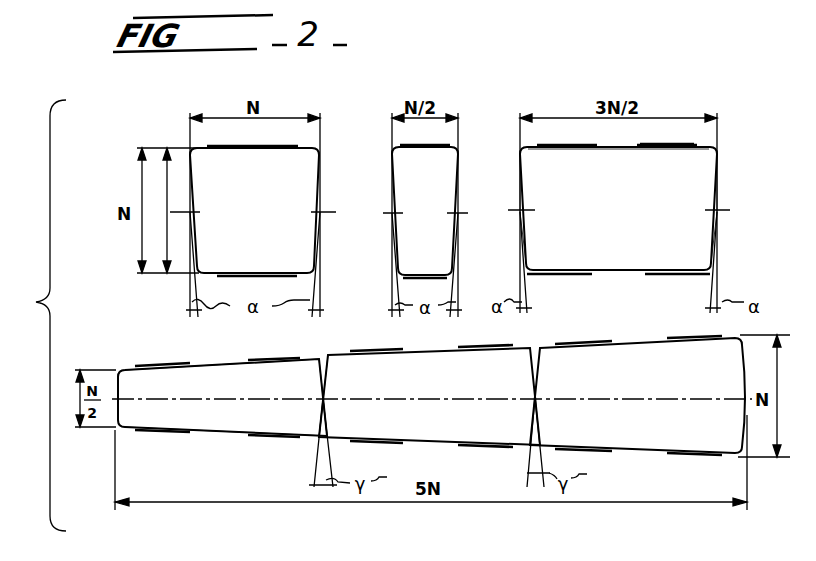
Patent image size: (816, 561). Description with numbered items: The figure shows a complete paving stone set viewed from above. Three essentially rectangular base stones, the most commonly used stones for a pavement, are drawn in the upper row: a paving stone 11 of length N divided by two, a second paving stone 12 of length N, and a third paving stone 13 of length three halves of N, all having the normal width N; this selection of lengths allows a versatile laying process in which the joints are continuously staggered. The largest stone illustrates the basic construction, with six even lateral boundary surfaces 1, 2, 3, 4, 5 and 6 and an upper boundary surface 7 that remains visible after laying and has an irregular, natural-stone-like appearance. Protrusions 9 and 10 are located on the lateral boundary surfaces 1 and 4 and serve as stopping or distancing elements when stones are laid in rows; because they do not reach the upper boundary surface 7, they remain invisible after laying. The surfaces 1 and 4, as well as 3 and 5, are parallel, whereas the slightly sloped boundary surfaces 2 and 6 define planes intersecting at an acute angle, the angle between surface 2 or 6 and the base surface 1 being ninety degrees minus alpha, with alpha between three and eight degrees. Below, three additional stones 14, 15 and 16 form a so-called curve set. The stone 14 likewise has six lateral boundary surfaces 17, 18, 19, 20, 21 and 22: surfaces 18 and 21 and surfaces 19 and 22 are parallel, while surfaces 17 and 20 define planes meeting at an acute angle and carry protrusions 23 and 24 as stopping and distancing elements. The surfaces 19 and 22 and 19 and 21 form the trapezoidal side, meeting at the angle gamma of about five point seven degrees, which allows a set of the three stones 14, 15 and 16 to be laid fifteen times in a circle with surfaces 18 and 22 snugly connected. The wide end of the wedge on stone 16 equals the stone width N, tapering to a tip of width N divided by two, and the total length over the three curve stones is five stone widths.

The lateral boundary surface 1 is at (621, 276).
The lateral boundary surface 2 is at (716, 246).
The lateral boundary surface 3 is at (718, 184).
The lateral boundary surface 4 is at (622, 146).
The lateral boundary surface 5 is at (520, 182).
The lateral boundary surface 6 is at (521, 249).
The upper boundary surface 7 is at (608, 225).
The protrusion 9 is at (553, 278).
The protrusion 10 is at (559, 144).
The paving stone 11 is at (436, 134).
The paving stone 12 is at (287, 136).
The paving stone 13 is at (672, 130).
The paving stone 14 is at (221, 440).
The paving stone 15 is at (473, 455).
The paving stone 16 is at (674, 465).
The lateral boundary surface 17 is at (205, 435).
The lateral boundary surface 18 is at (336, 420).
The lateral boundary surface 19 is at (338, 380).
The lateral boundary surface 20 is at (225, 362).
The lateral boundary surface 21 is at (120, 384).
The lateral boundary surface 22 is at (118, 410).
The protrusion 23 is at (172, 433).
The protrusion 24 is at (165, 363).